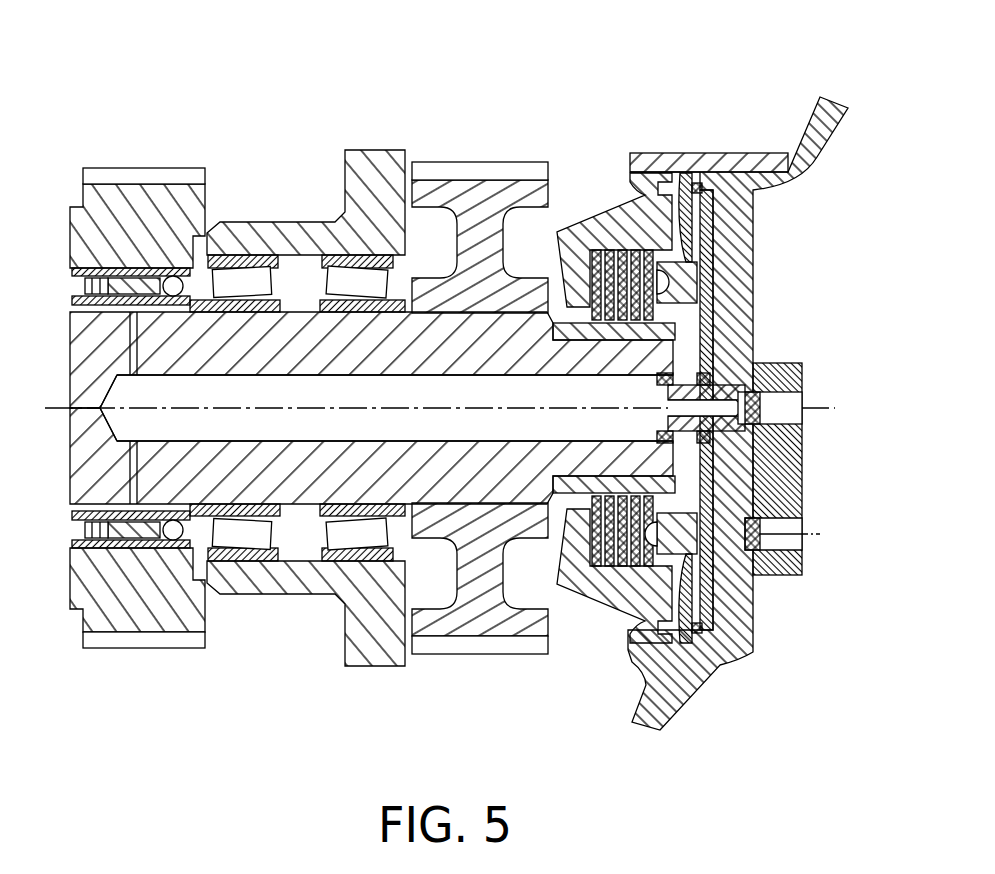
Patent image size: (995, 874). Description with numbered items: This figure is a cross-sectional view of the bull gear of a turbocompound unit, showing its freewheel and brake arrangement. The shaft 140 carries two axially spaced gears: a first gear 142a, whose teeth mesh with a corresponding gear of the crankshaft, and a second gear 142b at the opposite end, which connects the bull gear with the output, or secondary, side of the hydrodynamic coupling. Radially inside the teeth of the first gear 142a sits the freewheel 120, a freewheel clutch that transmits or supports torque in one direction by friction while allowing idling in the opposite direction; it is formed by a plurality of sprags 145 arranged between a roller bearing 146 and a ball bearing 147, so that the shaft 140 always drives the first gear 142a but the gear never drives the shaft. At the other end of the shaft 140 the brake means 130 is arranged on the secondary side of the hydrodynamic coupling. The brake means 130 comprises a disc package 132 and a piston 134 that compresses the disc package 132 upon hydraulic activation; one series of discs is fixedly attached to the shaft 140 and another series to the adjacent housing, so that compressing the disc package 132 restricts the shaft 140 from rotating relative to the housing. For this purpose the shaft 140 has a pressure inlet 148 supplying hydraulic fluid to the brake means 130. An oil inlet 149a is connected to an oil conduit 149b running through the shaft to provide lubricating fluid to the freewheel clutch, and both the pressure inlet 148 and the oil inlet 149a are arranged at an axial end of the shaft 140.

The freewheel 120 is at (98, 580).
The brake means 130 is at (690, 73).
The disc package 132 is at (600, 590).
The piston 134 is at (740, 282).
The shaft 140 is at (478, 472).
The first gear 142a is at (205, 205).
The second gear 142b is at (480, 203).
The sprags 145 is at (143, 272).
The roller bearing 146 is at (92, 274).
The ball bearing 147 is at (176, 270).
The pressure inlet 148 is at (778, 540).
The oil inlet 149a is at (780, 362).
The oil conduit 149b is at (300, 430).